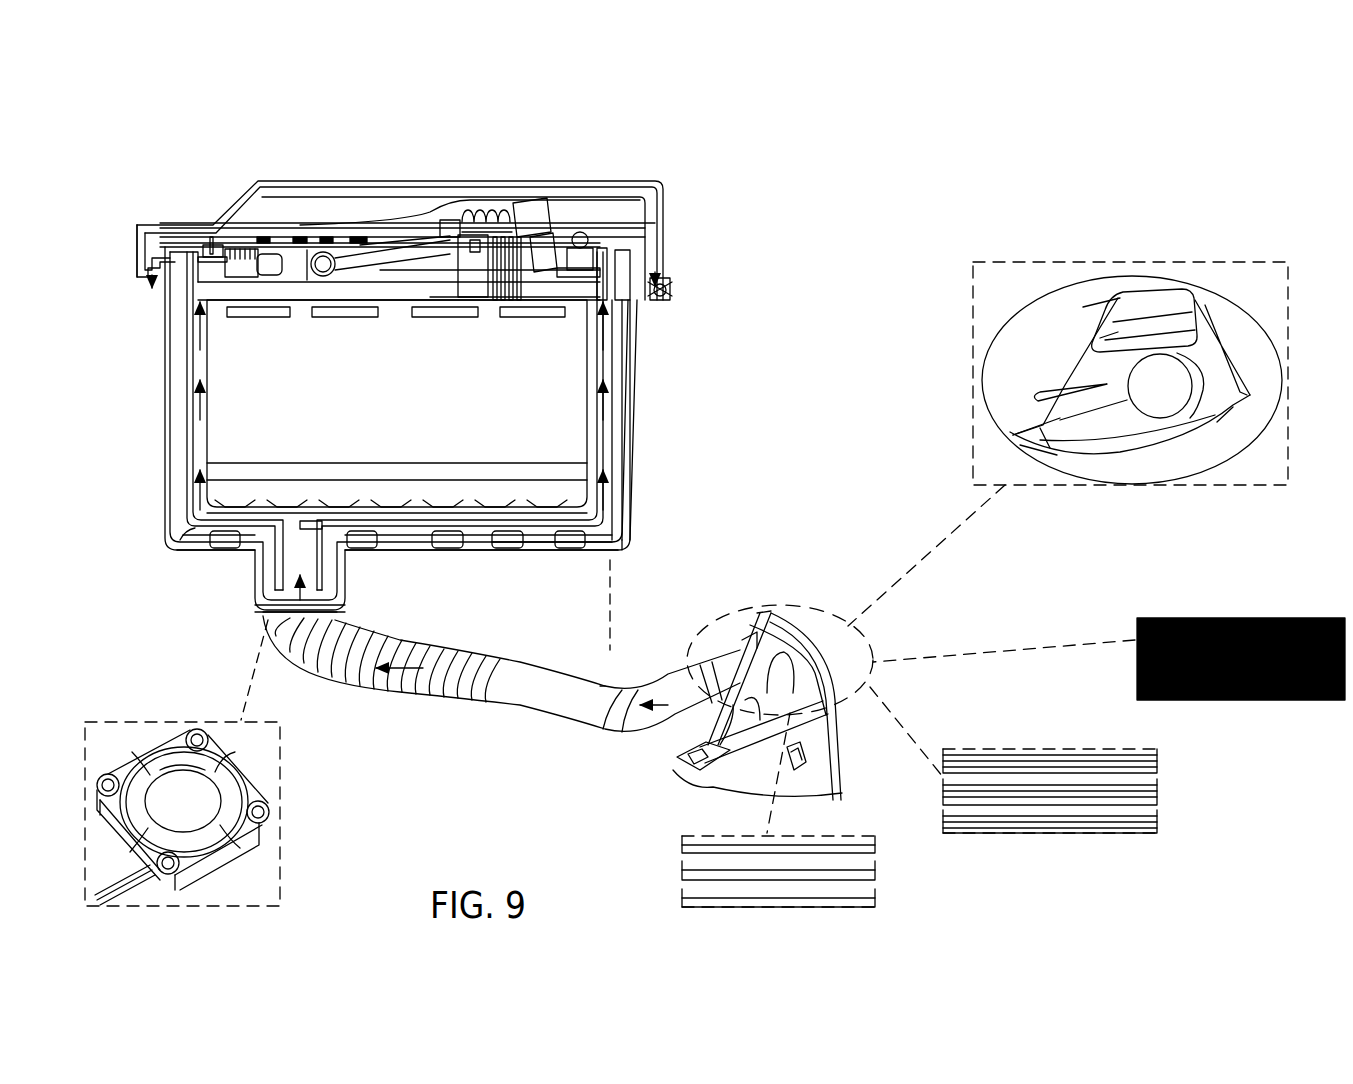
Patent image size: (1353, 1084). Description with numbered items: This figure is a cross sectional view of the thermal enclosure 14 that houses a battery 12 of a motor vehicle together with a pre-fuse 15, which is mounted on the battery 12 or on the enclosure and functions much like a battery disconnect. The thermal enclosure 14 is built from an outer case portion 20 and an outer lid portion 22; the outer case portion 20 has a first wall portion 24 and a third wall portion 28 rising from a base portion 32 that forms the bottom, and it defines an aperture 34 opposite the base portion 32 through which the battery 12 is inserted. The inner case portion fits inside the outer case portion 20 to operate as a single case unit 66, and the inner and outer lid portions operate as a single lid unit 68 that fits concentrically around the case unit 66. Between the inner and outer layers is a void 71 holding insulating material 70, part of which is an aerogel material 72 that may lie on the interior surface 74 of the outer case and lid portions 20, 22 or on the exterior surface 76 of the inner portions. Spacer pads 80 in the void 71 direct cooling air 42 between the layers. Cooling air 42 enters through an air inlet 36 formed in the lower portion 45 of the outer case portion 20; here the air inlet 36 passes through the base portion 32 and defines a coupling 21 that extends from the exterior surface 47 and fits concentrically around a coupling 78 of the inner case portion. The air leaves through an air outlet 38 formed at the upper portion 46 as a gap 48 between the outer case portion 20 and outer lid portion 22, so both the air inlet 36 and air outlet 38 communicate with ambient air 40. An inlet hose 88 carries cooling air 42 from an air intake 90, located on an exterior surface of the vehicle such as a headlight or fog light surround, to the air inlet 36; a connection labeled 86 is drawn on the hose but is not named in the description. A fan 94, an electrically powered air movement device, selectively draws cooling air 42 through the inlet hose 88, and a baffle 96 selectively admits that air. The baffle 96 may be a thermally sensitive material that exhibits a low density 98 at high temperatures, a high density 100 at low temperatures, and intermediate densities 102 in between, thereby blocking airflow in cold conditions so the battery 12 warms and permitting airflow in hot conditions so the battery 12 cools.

The battery 12 is at (545, 447).
The thermal enclosure 14 is at (725, 176).
The pre-fuse 15 is at (600, 272).
The outer case portion 20 is at (625, 485).
The coupling 21 is at (355, 580).
The outer lid portion 22 is at (318, 180).
The first wall portion 24 is at (165, 405).
The third wall portion 28 is at (632, 395).
The base portion 32 is at (535, 555).
The aperture 34 is at (632, 180).
The air inlet 36 is at (265, 622).
The air outlet 38 is at (142, 296).
The ambient air 40 is at (1315, 863).
The cooling air 42 is at (290, 560).
The lower portion 45 is at (158, 476).
The upper portion 46 is at (125, 320).
The exterior surface 47 is at (570, 590).
The gap 48 is at (664, 300).
The case unit 66 is at (112, 538).
The lid unit 68 is at (128, 220).
The insulating material 70 is at (612, 530).
The void 71 is at (610, 645).
The aerogel material 72 is at (397, 524).
The interior surface 74 is at (190, 522).
The exterior surface 76 is at (190, 455).
The coupling 78 is at (300, 610).
The spacer pads 80 is at (232, 530).
The hose coupling 86 is at (685, 692).
The inlet hose 88 is at (522, 695).
The air intake 90 is at (975, 325).
The fan 94 is at (332, 623).
The baffle 96 is at (310, 520).
The low density 98 is at (690, 862).
The high density 100 is at (1245, 618).
The intermediate densities 102 is at (1065, 749).